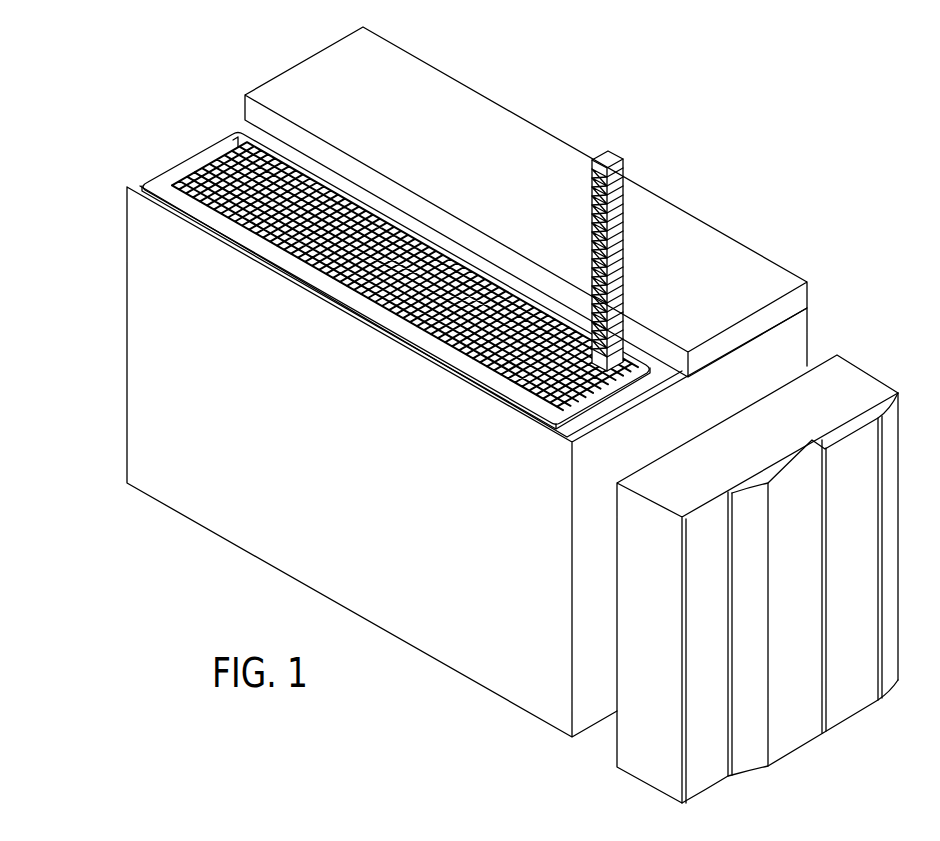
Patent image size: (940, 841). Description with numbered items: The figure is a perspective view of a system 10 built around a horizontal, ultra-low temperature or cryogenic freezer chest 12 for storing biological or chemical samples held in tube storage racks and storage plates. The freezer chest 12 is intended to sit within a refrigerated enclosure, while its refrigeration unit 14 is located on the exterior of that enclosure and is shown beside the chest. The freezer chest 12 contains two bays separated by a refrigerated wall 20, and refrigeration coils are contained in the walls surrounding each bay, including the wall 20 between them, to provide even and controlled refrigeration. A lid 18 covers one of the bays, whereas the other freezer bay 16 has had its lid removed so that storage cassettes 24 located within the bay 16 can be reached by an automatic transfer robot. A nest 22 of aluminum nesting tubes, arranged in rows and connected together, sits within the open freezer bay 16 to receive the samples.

The system 10 is at (610, 103).
The horizontal freezer chest 12 is at (148, 434).
The refrigeration unit 14 is at (870, 383).
The freezer bay 16 is at (197, 170).
The lid 18 is at (702, 235).
The refrigerated wall 20 is at (293, 152).
The nest of nesting tubes 22 is at (335, 230).
The storage cassette 24 is at (617, 149).